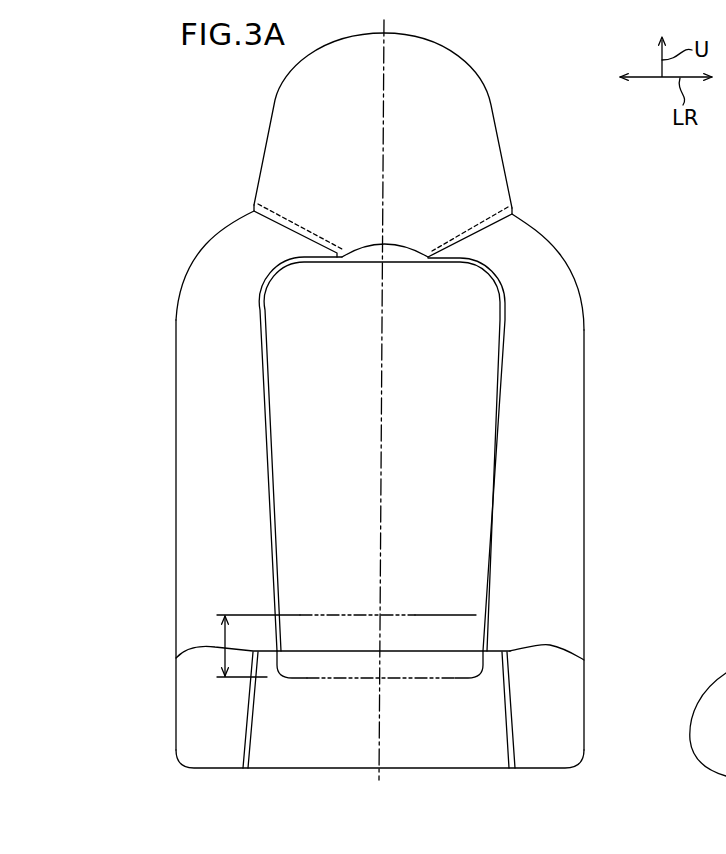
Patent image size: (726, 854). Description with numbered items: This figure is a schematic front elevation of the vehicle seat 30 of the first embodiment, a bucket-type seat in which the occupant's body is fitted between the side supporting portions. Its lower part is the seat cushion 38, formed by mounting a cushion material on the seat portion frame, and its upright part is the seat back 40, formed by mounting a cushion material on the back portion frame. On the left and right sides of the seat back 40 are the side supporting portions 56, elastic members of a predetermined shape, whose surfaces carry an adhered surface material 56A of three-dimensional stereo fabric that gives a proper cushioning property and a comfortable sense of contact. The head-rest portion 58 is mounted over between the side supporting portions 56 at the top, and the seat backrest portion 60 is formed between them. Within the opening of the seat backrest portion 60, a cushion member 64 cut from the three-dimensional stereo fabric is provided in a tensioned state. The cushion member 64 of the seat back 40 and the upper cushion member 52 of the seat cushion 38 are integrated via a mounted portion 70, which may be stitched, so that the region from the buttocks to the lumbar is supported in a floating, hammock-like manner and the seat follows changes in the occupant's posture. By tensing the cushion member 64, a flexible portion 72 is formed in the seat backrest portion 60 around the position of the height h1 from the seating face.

The seat 30 is at (648, 198).
The seat cushion 38 is at (529, 630).
The seat back 40 is at (612, 403).
The upper cushion member 52 is at (480, 688).
The side supporting portions 56 is at (193, 371).
The surface material 56A is at (186, 312).
The head-rest portion 58 is at (485, 142).
The seat backrest portion 60 is at (473, 318).
The cushion member 64 is at (468, 396).
The mounted portion 70 is at (316, 676).
The flexible portion 72 is at (470, 610).
The height h1 is at (222, 638).